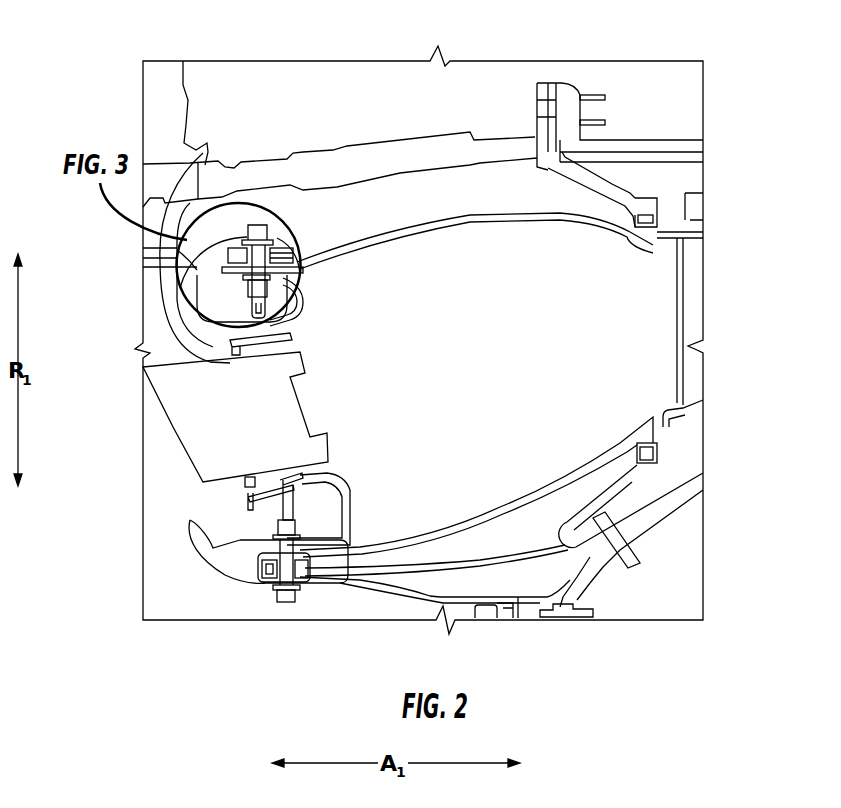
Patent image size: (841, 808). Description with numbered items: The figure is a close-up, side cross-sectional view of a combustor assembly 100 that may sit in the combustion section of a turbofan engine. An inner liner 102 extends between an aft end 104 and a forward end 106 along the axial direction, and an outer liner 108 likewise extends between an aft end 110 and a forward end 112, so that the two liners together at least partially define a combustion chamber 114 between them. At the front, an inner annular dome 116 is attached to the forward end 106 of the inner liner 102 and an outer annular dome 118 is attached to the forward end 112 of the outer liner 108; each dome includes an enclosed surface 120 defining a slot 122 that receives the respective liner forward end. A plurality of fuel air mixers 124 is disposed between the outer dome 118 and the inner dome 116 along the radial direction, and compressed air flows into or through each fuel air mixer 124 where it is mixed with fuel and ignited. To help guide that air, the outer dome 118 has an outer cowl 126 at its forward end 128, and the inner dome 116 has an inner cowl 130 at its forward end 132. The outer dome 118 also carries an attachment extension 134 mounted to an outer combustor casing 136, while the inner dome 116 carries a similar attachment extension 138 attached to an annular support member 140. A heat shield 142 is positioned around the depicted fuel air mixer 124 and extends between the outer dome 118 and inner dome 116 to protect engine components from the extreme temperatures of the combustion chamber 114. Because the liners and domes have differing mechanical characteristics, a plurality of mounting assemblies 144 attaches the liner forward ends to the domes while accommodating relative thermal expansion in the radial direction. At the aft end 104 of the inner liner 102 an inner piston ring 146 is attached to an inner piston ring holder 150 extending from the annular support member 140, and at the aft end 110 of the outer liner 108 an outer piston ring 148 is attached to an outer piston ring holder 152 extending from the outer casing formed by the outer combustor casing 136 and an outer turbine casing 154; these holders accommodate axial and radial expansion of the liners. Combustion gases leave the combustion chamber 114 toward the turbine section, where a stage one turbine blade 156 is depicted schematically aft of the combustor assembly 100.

The combustor assembly 100 is at (487, 84).
The inner liner 102 is at (521, 502).
The aft end 104 is at (629, 418).
The forward end 106 is at (308, 578).
The outer liner 108 is at (465, 216).
The aft end 110 is at (632, 258).
The forward end 112 is at (235, 240).
The combustion chamber 114 is at (477, 383).
The inner annular dome 116 is at (243, 567).
The outer annular dome 118 is at (178, 263).
The enclosed surface 120 is at (290, 256).
The slot 122 is at (284, 240).
The fuel air mixer 124 is at (228, 417).
The outer cowl 126 is at (187, 287).
The forward end 128 is at (165, 280).
The inner cowl 130 is at (243, 552).
The forward end 132 is at (203, 574).
The attachment extension 134 is at (143, 167).
The outer combustor casing 136 is at (432, 160).
The attachment extension 138 is at (418, 598).
The annular support member 140 is at (560, 592).
The heat shield 142 is at (303, 305).
The mounting assembly 144 is at (256, 214).
The inner piston ring 146 is at (657, 445).
The outer piston ring 148 is at (648, 219).
The inner piston ring holder 150 is at (617, 487).
The outer piston ring holder 152 is at (610, 185).
The outer turbine casing 154 is at (610, 145).
The stage 1 turbine blade 156 is at (690, 298).